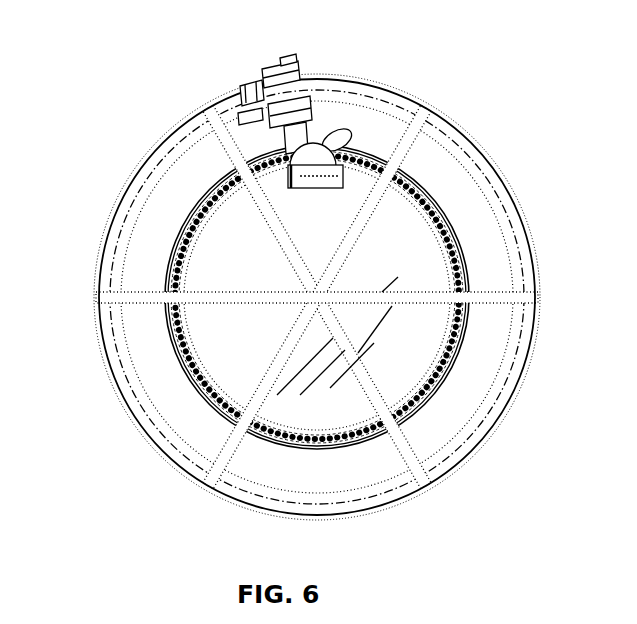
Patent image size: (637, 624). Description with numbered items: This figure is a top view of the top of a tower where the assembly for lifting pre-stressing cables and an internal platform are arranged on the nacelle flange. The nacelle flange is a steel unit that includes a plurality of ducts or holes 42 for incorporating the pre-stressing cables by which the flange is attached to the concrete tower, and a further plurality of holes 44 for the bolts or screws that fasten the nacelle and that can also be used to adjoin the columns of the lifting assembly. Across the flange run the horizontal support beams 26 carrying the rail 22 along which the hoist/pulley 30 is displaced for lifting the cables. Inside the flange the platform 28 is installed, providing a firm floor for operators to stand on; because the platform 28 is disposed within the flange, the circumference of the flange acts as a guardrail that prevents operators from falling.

The rail 22 is at (498, 210).
The ducts/holes for pre-stress cable 42 is at (130, 202).
The holes for fastening bolts of nacelle flange 44 is at (174, 338).
The horizontal support beams 26 is at (403, 447).
The platform 28 is at (384, 338).
The hoist/pulley 30 is at (272, 77).